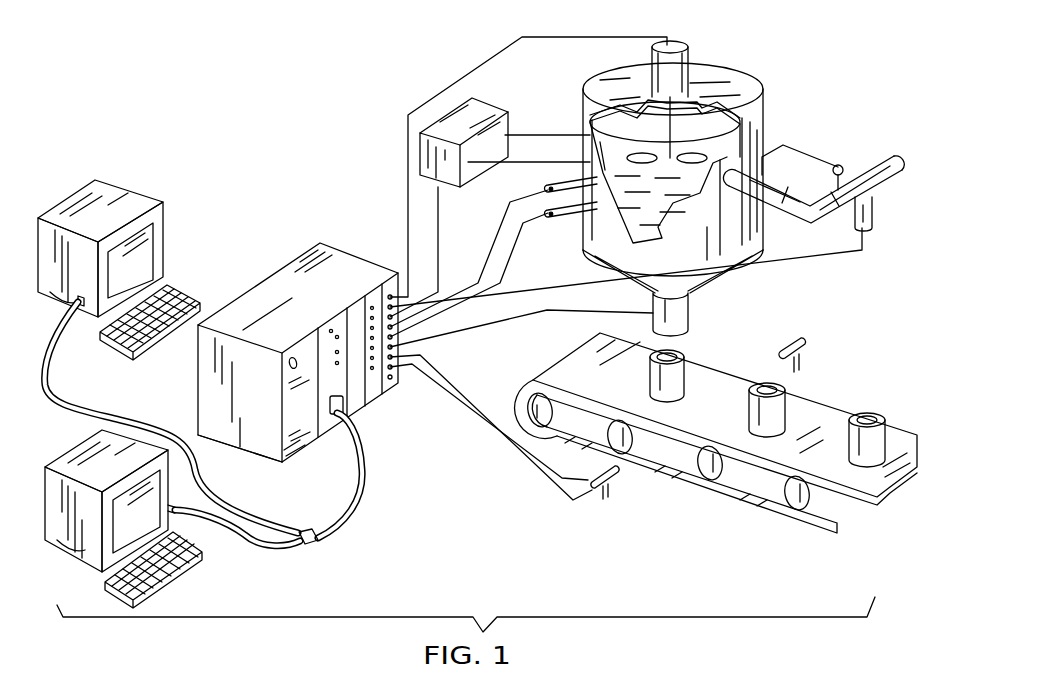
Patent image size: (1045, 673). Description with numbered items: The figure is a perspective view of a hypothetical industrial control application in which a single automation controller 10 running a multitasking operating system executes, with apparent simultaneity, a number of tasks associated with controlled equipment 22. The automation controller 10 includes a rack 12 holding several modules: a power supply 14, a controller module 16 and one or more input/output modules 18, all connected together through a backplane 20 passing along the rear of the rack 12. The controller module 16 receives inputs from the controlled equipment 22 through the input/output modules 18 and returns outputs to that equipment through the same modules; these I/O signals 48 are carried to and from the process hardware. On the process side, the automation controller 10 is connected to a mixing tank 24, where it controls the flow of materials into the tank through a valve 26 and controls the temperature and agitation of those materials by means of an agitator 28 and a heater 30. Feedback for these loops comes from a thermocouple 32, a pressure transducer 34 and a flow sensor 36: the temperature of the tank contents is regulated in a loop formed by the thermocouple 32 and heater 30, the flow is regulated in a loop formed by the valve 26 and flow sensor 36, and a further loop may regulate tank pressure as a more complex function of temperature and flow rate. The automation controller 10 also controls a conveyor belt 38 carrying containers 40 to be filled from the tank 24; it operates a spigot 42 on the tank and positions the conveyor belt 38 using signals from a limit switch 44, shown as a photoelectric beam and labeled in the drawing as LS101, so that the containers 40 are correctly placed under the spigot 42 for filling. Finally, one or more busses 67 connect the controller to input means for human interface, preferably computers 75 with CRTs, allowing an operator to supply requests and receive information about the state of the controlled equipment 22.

The automation controller 10 is at (281, 368).
The rack 12 is at (262, 285).
The power supply 14 is at (309, 440).
The controller module 16 is at (337, 420).
The input/output module 18 is at (380, 400).
The backplane 20 is at (192, 390).
The controlled equipment 22 is at (667, 180).
The mixing tank 24 is at (763, 130).
The valve 26 is at (877, 220).
The agitator 28 is at (683, 83).
The heater 30 is at (552, 133).
The thermocouple 32 is at (552, 178).
The pressure transducer 34 is at (568, 218).
The flow sensor 36 is at (838, 163).
The conveyor belt 38 is at (909, 432).
The containers 40 is at (788, 408).
The spigot 42 is at (687, 318).
The limit switch 44 is at (807, 349).
The I/O signals 48 is at (533, 326).
The bus 67 is at (318, 545).
The computers 75 is at (143, 262).
The limit switch LS101 is at (582, 497).